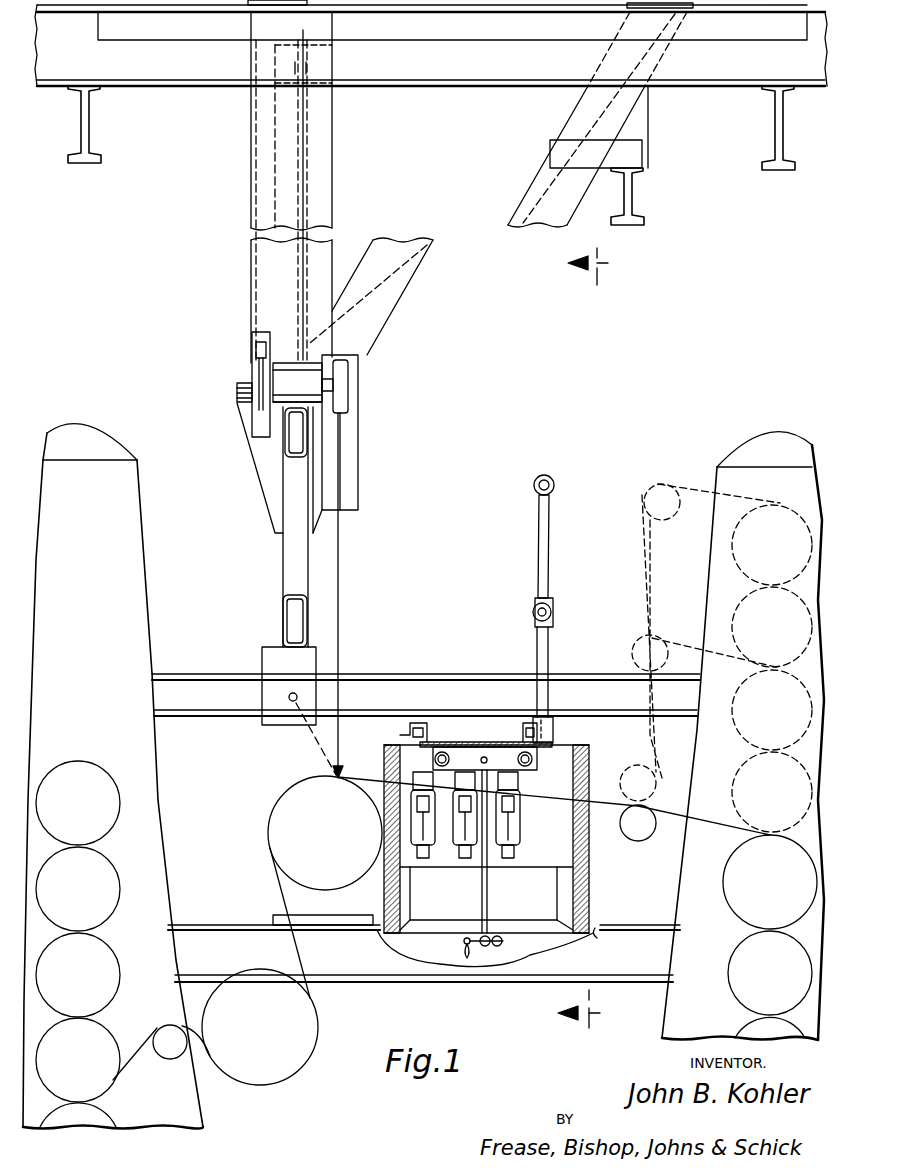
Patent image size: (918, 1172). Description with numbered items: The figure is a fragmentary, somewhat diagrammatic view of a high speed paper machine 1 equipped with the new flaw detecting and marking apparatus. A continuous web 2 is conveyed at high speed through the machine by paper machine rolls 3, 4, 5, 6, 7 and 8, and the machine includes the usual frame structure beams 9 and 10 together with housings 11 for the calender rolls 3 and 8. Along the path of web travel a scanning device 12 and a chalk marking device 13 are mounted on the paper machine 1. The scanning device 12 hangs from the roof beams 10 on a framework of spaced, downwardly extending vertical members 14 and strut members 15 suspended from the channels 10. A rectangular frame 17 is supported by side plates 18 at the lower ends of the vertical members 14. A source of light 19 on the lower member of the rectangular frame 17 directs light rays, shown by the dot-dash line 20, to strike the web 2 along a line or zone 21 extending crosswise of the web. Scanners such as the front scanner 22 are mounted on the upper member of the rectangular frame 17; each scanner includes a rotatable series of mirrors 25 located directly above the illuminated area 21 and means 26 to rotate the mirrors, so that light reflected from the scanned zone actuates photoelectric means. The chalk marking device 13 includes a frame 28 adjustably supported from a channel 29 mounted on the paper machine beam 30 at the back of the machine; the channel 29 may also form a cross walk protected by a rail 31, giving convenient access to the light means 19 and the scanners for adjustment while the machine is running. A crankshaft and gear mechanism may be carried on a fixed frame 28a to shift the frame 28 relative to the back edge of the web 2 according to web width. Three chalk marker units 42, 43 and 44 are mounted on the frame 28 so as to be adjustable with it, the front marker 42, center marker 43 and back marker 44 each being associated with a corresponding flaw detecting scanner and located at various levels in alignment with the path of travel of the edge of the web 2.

The paper machine 1 is at (160, 1135).
The continuous web 2 is at (705, 823).
The calender roll 3 is at (100, 1040).
The paper machine roll 4 is at (170, 1045).
The paper machine roll 5 is at (305, 1040).
The paper machine roll 6 is at (277, 848).
The paper machine roll 7 is at (638, 832).
The calender roll 8 is at (745, 908).
The frame structure beam 9 is at (548, 965).
The roof beam 10 is at (510, 72).
The housing 11 is at (735, 455).
The scanning device 12 is at (250, 475).
The chalk marking device 13 is at (396, 737).
The vertical member 14 is at (320, 202).
The strut member 15 is at (527, 188).
The rectangular frame 17 is at (305, 552).
The side plate 18 is at (257, 447).
The source of light 19 is at (262, 692).
The light rays 20 is at (333, 735).
The illuminated line or zone 21 is at (337, 780).
The front scanner 22 is at (360, 427).
The rotatable series of mirrors 25 is at (343, 380).
The means to rotate the mirrors 26 is at (252, 383).
The frame 28 is at (458, 753).
The fixed frame 28a is at (580, 888).
The channel 29 is at (495, 742).
The paper machine beam 30 is at (585, 690).
The rail 31 is at (547, 568).
The front marker unit 42 is at (428, 862).
The center marker unit 43 is at (468, 864).
The back marker unit 44 is at (508, 866).